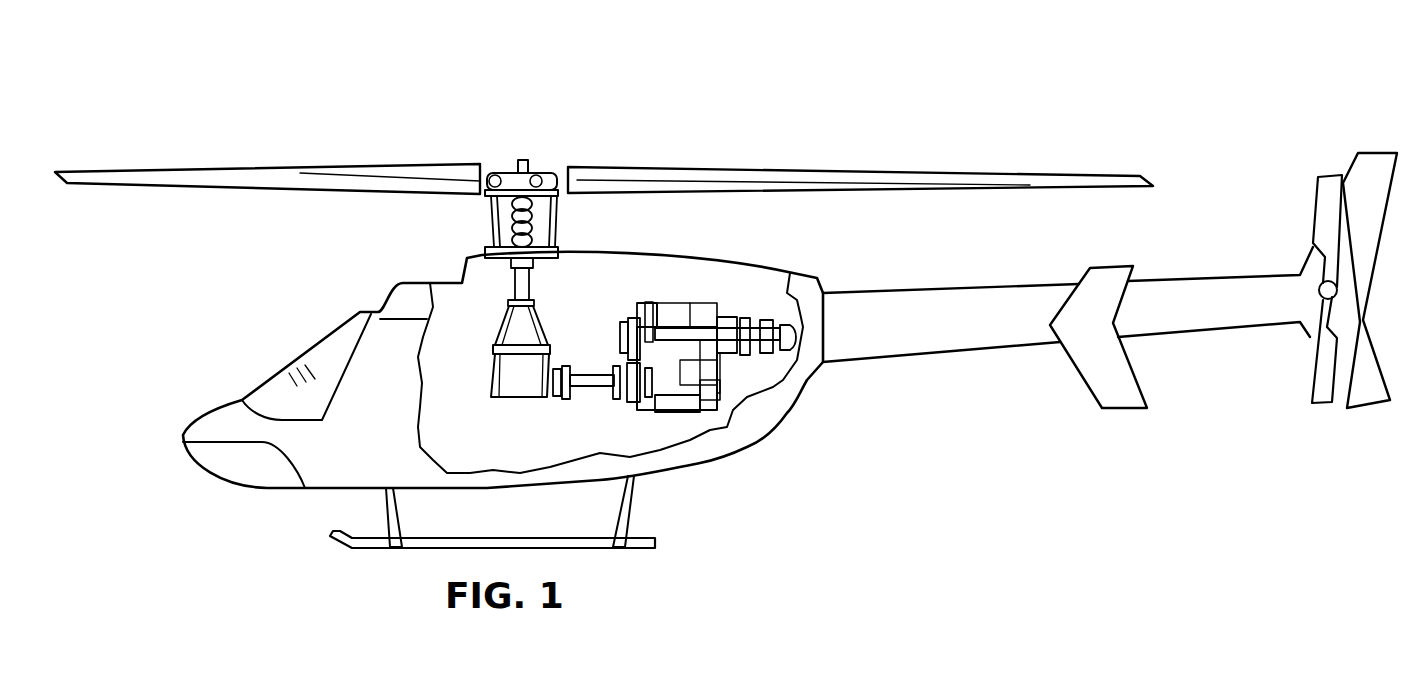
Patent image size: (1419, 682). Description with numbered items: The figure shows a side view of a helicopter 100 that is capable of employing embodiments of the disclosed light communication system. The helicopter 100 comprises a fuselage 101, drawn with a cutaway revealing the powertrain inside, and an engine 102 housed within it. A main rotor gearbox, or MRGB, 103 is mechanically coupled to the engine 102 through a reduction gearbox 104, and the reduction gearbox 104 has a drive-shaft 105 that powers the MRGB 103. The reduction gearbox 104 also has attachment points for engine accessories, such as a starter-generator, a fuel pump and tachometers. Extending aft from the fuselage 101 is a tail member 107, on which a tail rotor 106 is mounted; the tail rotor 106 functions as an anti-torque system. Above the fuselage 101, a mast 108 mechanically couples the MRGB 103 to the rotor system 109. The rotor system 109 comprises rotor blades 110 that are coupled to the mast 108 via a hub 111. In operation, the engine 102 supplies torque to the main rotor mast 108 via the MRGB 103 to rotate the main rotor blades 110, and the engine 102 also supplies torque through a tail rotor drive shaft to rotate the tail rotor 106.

The helicopter 100 is at (840, 80).
The fuselage 101 is at (753, 445).
The engine 102 is at (735, 318).
The main rotor gearbox (MRGB) 103 is at (548, 325).
The reduction gearbox 104 is at (662, 407).
The drive-shaft 105 is at (594, 388).
The tail rotor 106 is at (1318, 195).
The tail member 107 is at (955, 352).
The mast 108 is at (503, 290).
The rotor system 109 is at (563, 213).
The rotor blades 110 is at (220, 172).
The hub 111 is at (508, 174).